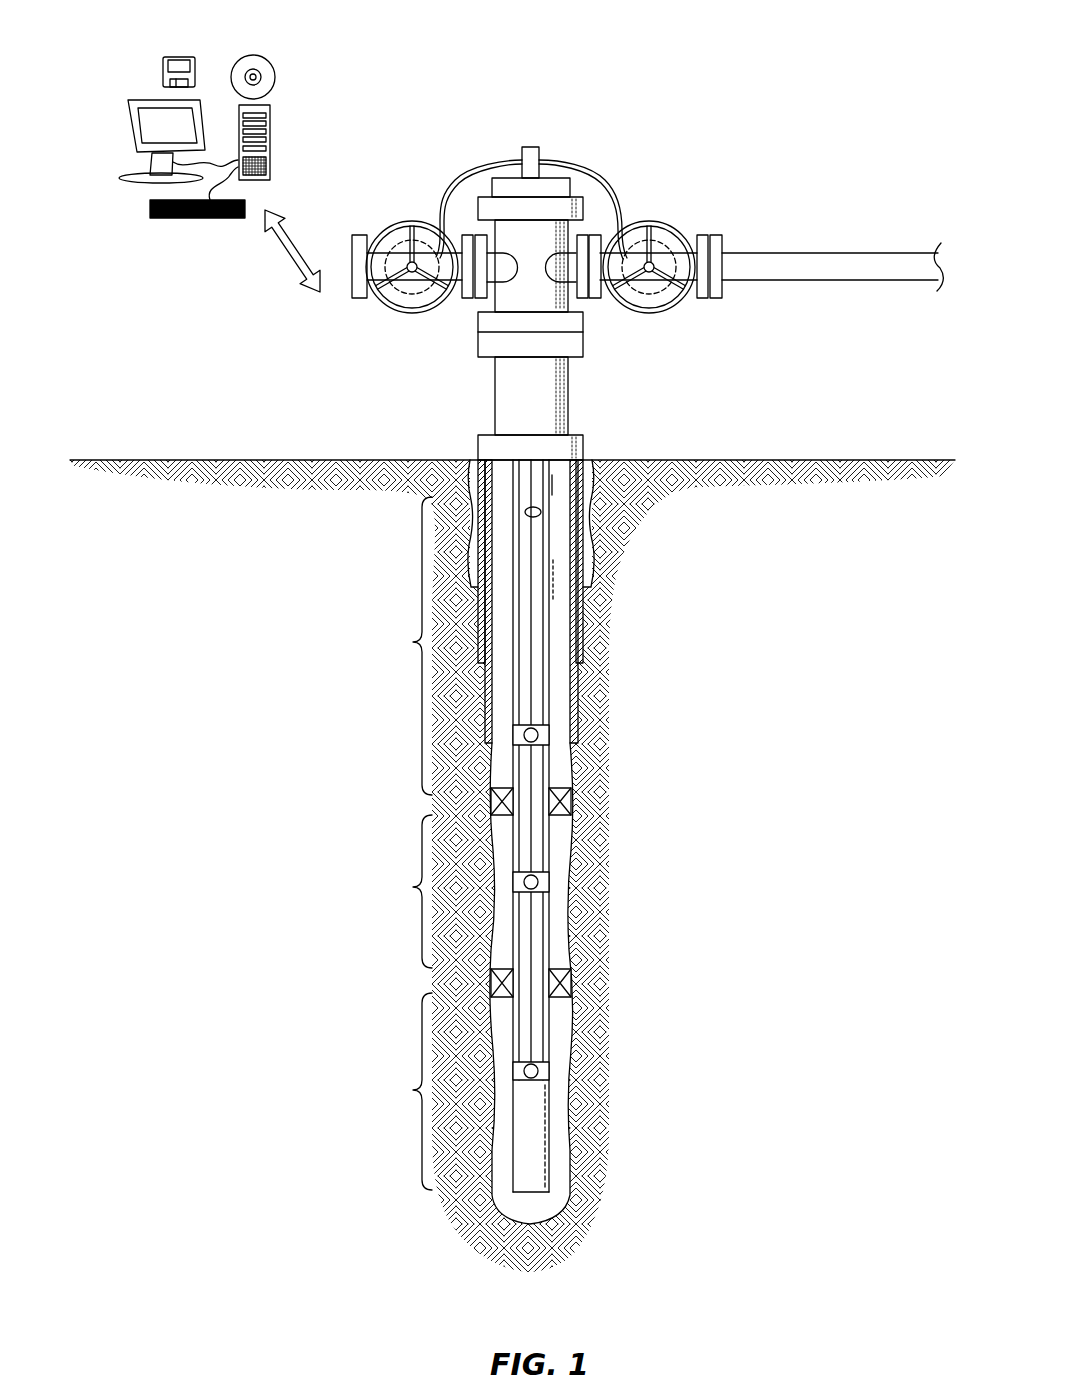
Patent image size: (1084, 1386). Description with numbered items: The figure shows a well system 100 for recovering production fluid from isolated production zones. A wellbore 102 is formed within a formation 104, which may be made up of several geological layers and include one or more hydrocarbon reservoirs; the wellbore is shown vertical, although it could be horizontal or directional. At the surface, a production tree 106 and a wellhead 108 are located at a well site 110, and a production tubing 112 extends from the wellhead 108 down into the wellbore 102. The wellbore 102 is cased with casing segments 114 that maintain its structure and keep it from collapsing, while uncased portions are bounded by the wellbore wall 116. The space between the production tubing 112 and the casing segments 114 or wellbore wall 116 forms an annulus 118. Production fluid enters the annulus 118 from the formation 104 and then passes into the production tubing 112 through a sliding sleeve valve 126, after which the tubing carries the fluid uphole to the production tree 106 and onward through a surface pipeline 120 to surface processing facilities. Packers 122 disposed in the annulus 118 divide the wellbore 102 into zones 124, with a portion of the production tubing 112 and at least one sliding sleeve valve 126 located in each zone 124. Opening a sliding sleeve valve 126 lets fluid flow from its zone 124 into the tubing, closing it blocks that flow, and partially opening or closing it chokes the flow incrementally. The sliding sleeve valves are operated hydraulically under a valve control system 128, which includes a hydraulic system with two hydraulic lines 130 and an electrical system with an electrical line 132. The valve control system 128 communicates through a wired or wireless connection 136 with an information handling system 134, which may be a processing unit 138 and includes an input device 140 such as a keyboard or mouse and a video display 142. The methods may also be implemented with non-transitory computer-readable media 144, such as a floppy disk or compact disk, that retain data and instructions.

The well system 100 is at (780, 128).
The wellbore 102 is at (567, 748).
The formation 104 is at (829, 541).
The production tree 106 is at (487, 317).
The wellhead 108 is at (547, 400).
The well site 110 is at (455, 440).
The production tubing 112 is at (552, 483).
The casing segments 114 is at (583, 657).
The wellbore wall 116 is at (570, 773).
The annulus 118 is at (563, 617).
The surface pipeline 120 is at (883, 272).
The packers 122 is at (571, 802).
The zones 124 is at (400, 843).
The sliding sleeve valve 126 is at (550, 735).
The valve control system 128 is at (556, 582).
The hydraulic lines 130 is at (545, 512).
The electrical line 132 is at (521, 540).
The information handling system 134 is at (133, 44).
The connection 136 is at (280, 255).
The processing unit 138 is at (270, 116).
The input device 140 is at (157, 219).
The video display 142 is at (137, 132).
The non-transitory computer-readable media 144 is at (253, 56).